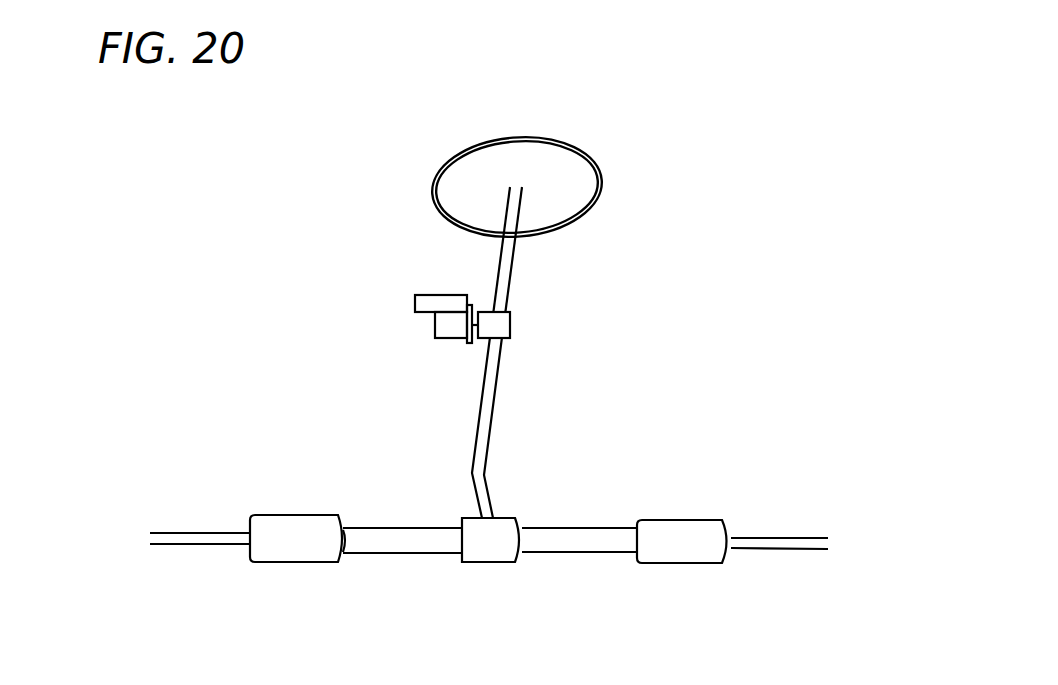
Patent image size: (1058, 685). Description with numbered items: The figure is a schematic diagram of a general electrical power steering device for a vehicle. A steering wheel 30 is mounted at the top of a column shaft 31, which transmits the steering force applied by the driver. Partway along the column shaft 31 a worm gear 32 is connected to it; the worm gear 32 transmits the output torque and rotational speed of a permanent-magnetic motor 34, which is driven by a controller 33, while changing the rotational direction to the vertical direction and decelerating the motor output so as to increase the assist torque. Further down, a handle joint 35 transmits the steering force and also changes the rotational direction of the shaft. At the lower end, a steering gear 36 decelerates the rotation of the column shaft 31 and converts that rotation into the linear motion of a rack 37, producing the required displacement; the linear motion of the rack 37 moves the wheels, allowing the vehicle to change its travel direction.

The steering wheel 30 is at (597, 172).
The column shaft 31 is at (505, 267).
The worm gear 32 is at (502, 325).
The controller 33 is at (457, 300).
The permanent-magnetic motor 34 is at (452, 325).
The handle joint 35 is at (483, 403).
The steering gear 36 is at (503, 542).
The rack 37 is at (393, 533).